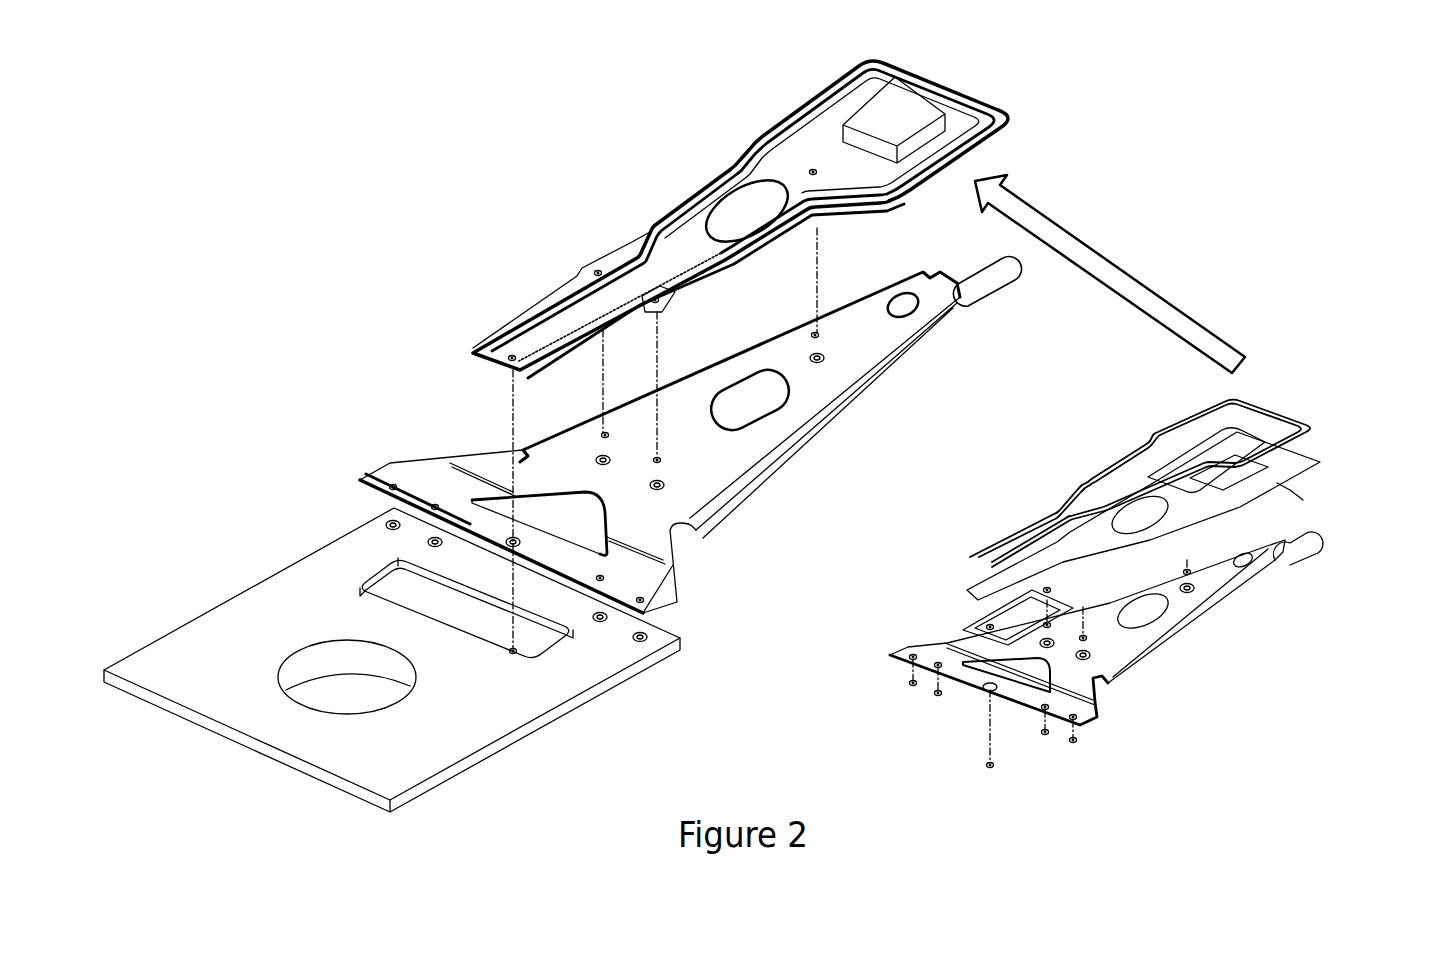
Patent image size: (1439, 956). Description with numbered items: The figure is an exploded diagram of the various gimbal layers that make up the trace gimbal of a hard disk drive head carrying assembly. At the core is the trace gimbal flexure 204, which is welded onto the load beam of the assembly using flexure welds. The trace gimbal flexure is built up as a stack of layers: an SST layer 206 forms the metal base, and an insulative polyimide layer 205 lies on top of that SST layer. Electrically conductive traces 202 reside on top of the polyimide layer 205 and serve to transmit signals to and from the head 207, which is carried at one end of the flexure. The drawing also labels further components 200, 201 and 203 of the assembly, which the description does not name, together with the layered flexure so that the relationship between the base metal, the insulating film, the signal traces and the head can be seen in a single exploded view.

The base plate 200 is at (265, 605).
The mounting bracket 201 is at (697, 488).
The electrically conductive traces 202 is at (1078, 480).
The bent tabs 203 is at (630, 555).
The trace gimbal flexure 204 is at (660, 178).
The insulative polyimide layer 205 is at (1018, 575).
The SST layer 206 is at (1067, 595).
The head 207 is at (905, 107).